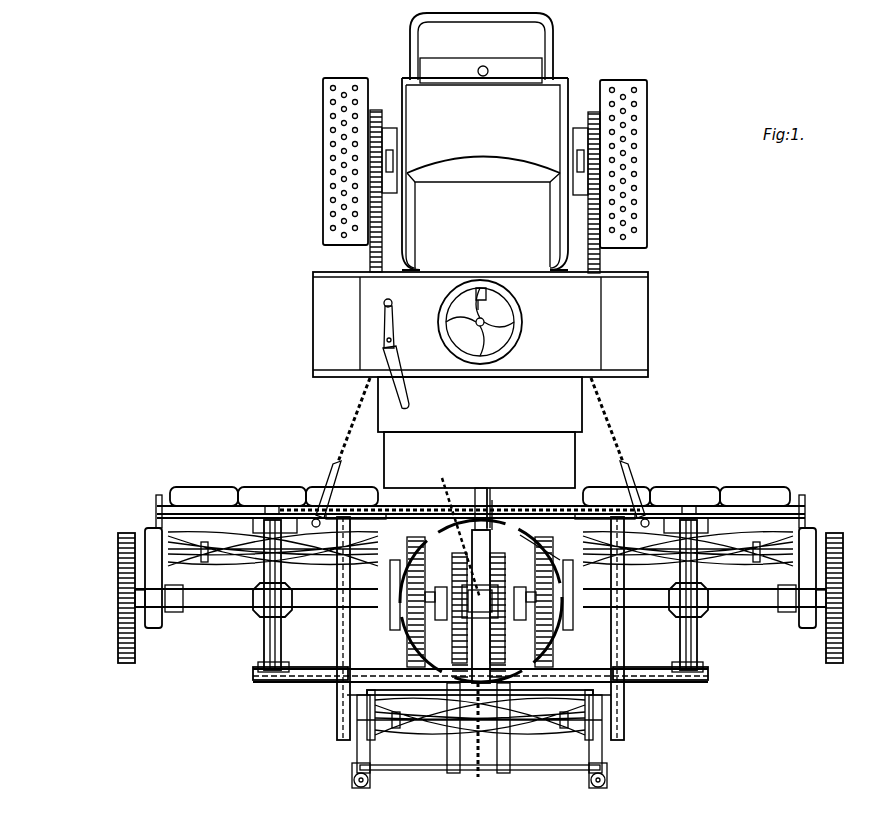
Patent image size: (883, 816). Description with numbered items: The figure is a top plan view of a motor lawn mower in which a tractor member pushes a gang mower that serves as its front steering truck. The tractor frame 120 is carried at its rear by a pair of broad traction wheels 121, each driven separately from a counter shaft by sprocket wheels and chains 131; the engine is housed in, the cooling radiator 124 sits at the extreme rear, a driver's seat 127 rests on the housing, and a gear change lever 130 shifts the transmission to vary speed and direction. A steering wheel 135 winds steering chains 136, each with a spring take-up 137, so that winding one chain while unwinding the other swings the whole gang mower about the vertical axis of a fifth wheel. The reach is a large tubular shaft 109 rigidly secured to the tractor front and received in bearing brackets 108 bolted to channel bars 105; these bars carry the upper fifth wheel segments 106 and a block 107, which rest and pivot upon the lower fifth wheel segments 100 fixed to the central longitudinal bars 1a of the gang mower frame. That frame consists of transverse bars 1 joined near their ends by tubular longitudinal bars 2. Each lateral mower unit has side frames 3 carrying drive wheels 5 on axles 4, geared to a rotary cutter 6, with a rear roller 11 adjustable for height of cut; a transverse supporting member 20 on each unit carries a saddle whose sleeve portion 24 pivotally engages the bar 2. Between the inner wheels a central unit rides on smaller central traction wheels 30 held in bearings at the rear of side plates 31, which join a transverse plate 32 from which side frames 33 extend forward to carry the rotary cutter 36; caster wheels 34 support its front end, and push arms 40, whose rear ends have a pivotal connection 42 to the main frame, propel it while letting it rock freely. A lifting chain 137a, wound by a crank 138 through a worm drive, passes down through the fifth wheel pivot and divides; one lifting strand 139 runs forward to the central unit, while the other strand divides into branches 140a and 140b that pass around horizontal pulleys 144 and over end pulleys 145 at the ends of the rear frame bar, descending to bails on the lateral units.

The tractor frame 120 is at (548, 15).
The cooling radiator 124 is at (530, 63).
The traction wheels 121 is at (333, 139).
The driver's seat 127 is at (464, 170).
The sprocket wheels and chains 131 is at (598, 266).
The gear change lever 130 is at (490, 303).
The steering wheel 135 is at (522, 320).
The crank 138 is at (392, 324).
The steering chains 136 is at (352, 412).
The spring take-up 137 is at (326, 476).
The bearing brackets 108 is at (480, 522).
The reach shaft 109 is at (490, 520).
The lifting chain 137a is at (445, 500).
The pivotal connection 42 is at (495, 515).
The horizontal pulleys 144 is at (505, 506).
The transverse bars 1 is at (697, 528).
The rear roller 11 is at (226, 500).
The end pulleys 145 is at (275, 506).
The lifting branch 140a is at (350, 512).
The lifting branch 140b is at (608, 512).
The side frames 3 is at (150, 538).
The drive wheels 5 is at (124, 622).
The axles 4 is at (137, 597).
The rotary cutter 6 is at (210, 566).
The supporting member 20 is at (197, 606).
The longitudinal bars 2 is at (268, 638).
The sleeve portion 24 is at (272, 612).
The upper fifth wheel segments 106 is at (560, 672).
The lower fifth wheel segments 100 is at (409, 528).
The channel bars 105 is at (600, 635).
The block 107 is at (535, 597).
The side plates 31 is at (414, 652).
The central traction wheels 30 is at (545, 655).
The push arms 40 is at (550, 540).
The central longitudinal bars 1a is at (358, 697).
The transverse plate 32 is at (583, 693).
The side frames 33 is at (597, 741).
The caster wheels 34 is at (352, 766).
The rotary cutter 36 is at (532, 740).
The lifting strand 139 is at (482, 770).